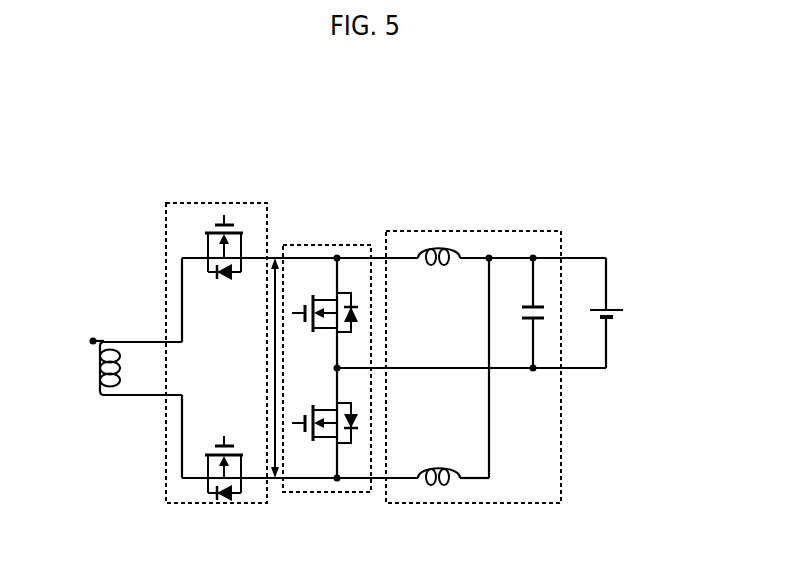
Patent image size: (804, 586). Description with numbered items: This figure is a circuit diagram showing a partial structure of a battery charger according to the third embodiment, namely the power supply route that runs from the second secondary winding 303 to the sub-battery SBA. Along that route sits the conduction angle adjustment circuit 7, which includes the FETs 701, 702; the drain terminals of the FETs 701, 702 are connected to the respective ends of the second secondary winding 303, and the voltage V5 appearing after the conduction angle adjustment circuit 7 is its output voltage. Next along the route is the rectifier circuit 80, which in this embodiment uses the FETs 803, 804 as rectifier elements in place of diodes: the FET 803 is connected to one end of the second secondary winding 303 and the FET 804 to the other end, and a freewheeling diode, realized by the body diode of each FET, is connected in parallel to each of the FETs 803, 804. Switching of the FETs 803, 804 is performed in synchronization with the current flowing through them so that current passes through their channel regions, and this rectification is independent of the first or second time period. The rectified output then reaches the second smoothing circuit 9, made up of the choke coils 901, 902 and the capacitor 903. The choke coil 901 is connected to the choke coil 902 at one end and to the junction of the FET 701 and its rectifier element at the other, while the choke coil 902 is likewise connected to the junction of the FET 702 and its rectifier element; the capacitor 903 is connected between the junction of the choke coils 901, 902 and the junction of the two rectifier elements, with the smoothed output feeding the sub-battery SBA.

The second secondary winding 303 is at (102, 333).
The conduction angle adjustment circuit 7 is at (168, 505).
The FET 701 is at (227, 285).
The FET 702 is at (220, 438).
The rectifier circuit 80 is at (325, 245).
The FET 803 is at (320, 338).
The FET 804 is at (307, 442).
The second smoothing circuit 9 is at (487, 231).
The choke coil 901 is at (442, 265).
The choke coil 902 is at (438, 467).
The capacitor 903 is at (532, 375).
The voltage V5 is at (277, 445).
The sub-battery SBA is at (612, 308).